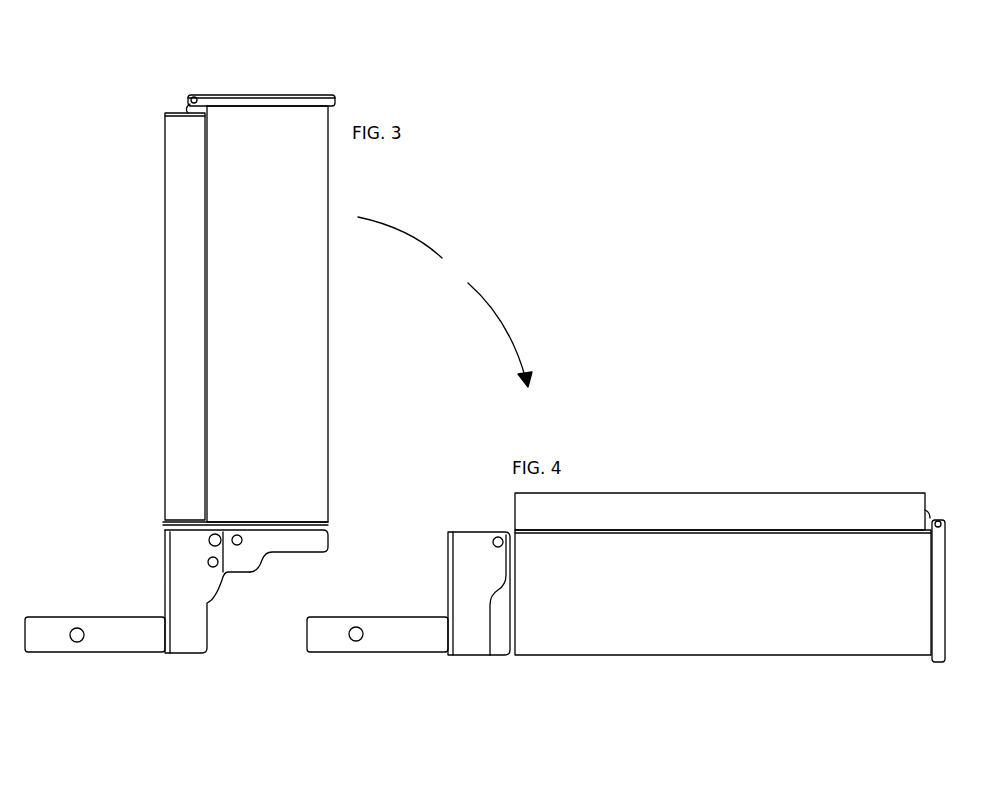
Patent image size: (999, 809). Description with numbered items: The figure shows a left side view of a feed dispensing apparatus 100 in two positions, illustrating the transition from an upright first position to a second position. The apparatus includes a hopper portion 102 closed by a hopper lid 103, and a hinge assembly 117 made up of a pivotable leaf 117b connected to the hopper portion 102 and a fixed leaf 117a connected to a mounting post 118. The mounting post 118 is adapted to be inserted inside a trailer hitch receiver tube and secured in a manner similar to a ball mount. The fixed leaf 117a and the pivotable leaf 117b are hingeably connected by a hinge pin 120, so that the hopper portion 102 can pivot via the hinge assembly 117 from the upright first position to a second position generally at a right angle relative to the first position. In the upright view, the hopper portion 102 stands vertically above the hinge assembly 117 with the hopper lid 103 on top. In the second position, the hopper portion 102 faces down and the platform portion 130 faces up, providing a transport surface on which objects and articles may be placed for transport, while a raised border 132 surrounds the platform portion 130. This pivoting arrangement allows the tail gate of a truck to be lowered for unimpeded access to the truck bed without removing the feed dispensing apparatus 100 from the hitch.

In FIG. 3, the feed dispensing apparatus 100 is at (264, 60).
In FIG. 4, the feed dispensing apparatus 100 is at (860, 437).
In FIG. 3, the hopper portion 102 is at (320, 340).
In FIG. 4, the hopper portion 102 is at (690, 622).
In FIG. 3, the hopper lid 103 is at (320, 93).
In FIG. 4, the hopper lid 103 is at (940, 660).
In FIG. 3, the hinge assembly 117 is at (253, 623).
In FIG. 4, the hinge assembly 117 is at (452, 673).
In FIG. 3, the fixed leaf 117a is at (190, 652).
In FIG. 4, the fixed leaf 117a is at (448, 542).
In FIG. 3, the pivotable leaf 117b is at (328, 551).
In FIG. 4, the pivotable leaf 117b is at (492, 653).
In FIG. 3, the mounting post 118 is at (106, 643).
In FIG. 4, the mounting post 118 is at (425, 650).
In FIG. 3, the hinge pin 120 is at (165, 532).
In FIG. 4, the hinge pin 120 is at (496, 536).
In FIG. 3, the platform portion 130 is at (155, 274).
In FIG. 4, the platform portion 130 is at (740, 485).
In FIG. 3, the raised border 132 is at (175, 143).
In FIG. 4, the raised border 132 is at (623, 500).